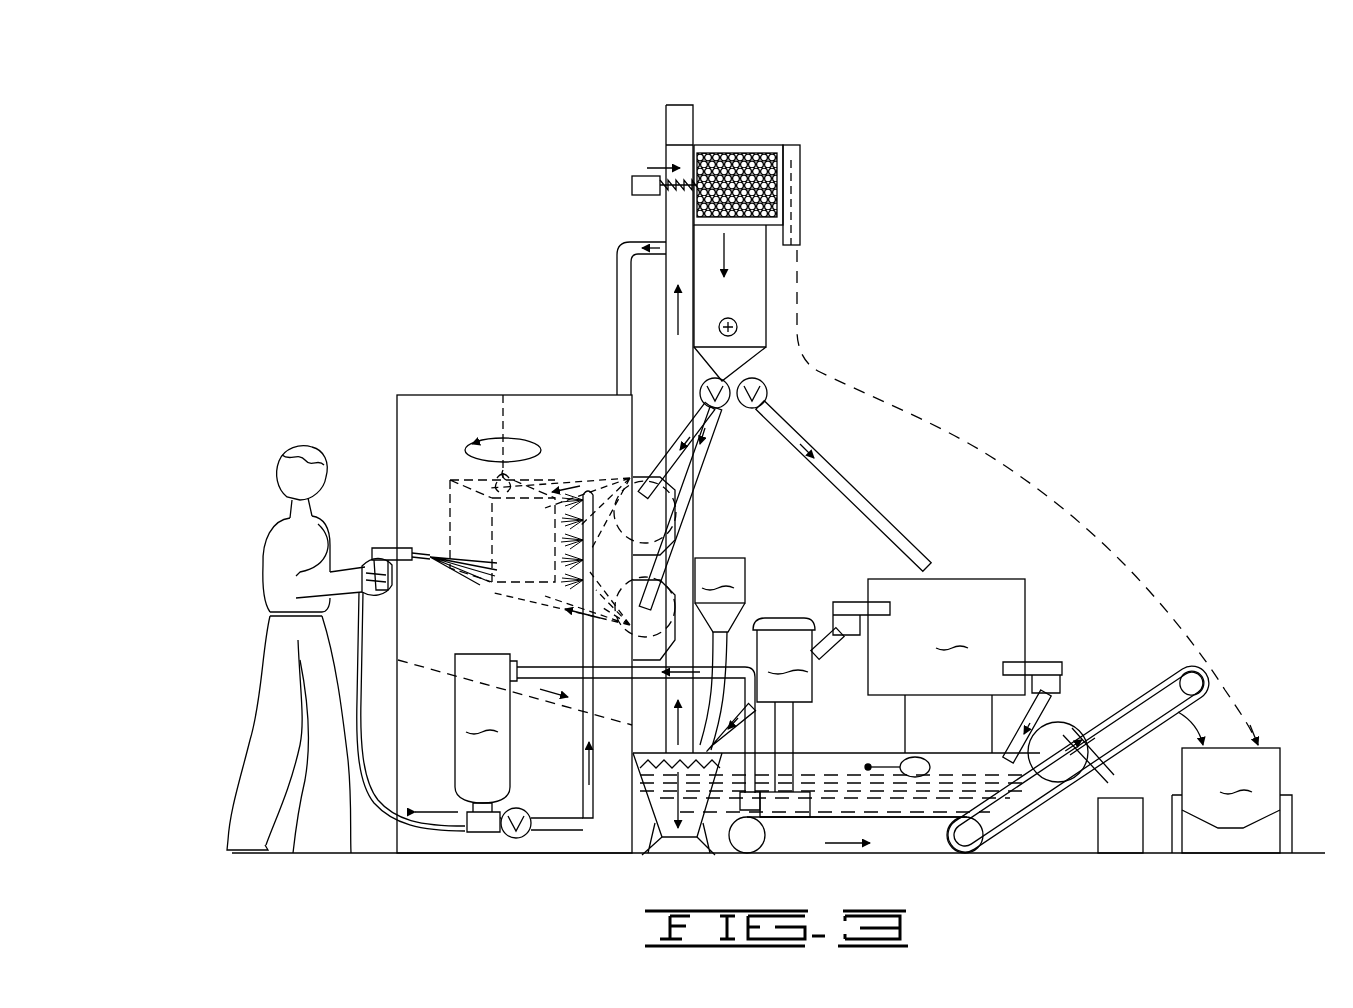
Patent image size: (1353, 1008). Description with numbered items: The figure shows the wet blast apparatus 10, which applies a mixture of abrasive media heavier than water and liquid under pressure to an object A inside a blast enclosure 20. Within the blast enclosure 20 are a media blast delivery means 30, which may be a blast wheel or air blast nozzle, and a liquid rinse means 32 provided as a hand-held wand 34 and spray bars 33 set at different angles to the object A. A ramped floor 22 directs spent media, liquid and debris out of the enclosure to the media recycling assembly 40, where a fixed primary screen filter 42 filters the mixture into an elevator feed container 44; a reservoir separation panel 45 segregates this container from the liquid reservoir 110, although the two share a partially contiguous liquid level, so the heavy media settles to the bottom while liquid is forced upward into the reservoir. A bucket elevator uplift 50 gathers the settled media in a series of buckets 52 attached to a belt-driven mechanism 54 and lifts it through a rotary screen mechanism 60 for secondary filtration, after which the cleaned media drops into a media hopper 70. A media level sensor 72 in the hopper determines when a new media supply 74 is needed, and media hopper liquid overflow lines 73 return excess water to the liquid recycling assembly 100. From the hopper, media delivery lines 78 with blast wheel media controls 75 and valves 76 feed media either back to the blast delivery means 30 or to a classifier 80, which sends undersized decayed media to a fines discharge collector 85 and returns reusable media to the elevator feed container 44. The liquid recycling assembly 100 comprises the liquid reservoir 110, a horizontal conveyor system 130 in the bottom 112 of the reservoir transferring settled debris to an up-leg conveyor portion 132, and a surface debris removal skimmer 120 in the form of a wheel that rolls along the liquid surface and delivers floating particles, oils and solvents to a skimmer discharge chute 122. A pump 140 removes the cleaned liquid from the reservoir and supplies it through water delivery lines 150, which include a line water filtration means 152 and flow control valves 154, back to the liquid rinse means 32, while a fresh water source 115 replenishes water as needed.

The apparatus 10 is at (1088, 245).
The blast enclosure 20 is at (431, 394).
The ramped floor 22 is at (420, 672).
The media blast delivery means 30 is at (632, 478).
The liquid rinse means 32 is at (468, 833).
The spray bars 33 is at (583, 652).
The hand-held wand 34 is at (388, 547).
The media recycling assembly 40 is at (950, 527).
The primary screen filter 42 is at (640, 763).
The elevator feed container 44 is at (644, 855).
The reservoir separation panel 45 is at (712, 857).
The bucket elevator uplift 50 is at (650, 429).
The buckets 52 is at (611, 429).
The belt-driven mechanism 54 is at (672, 288).
The rotary screen mechanism 60 is at (750, 158).
The media hopper 70 is at (767, 276).
The media level sensor 72 is at (737, 327).
The media hopper liquid overflow lines 73 is at (630, 241).
The new media supply 74 is at (720, 654).
The blast wheel media controls 75 is at (789, 405).
The valves 76 is at (766, 384).
The media delivery lines 78 is at (672, 428).
The classifier 80 is at (947, 666).
The fines discharge collector 85 is at (1232, 800).
The liquid recycling assembly 100 is at (945, 866).
The liquid reservoir 110 is at (828, 753).
The bottom 112 is at (856, 858).
The fresh water source 115 is at (904, 758).
The surface debris removal skimmer 120 is at (1086, 770).
The skimmer discharge chute 122 is at (1108, 775).
The horizontal conveyor system 130 is at (810, 854).
The up-leg conveyor portion 132 is at (1184, 672).
The pump 140 is at (784, 717).
The water delivery lines 150 is at (519, 666).
The line water filtration means 152 is at (486, 728).
The flow control valves 154 is at (520, 808).
The object A is at (452, 486).